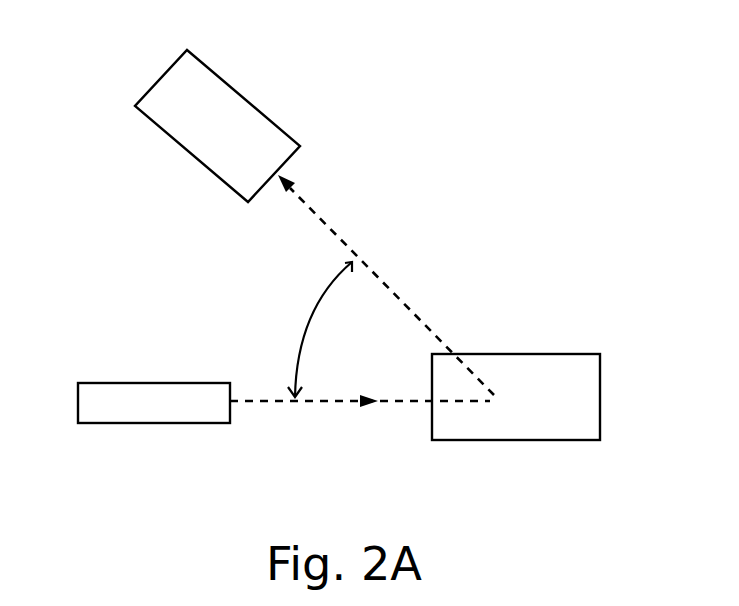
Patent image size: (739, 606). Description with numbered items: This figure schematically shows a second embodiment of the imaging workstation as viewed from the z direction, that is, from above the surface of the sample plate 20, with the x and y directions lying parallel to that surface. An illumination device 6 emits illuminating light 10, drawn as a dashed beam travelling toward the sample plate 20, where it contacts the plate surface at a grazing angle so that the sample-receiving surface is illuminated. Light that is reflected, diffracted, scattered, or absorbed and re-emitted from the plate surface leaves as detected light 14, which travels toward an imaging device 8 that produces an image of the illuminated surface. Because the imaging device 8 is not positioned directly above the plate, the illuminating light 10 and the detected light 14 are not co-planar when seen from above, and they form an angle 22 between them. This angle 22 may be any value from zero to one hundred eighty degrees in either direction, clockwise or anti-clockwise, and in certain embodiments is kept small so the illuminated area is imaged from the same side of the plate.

The illumination device 6 is at (152, 393).
The imaging device 8 is at (214, 97).
The illuminating light 10 is at (340, 403).
The detected light 14 is at (393, 292).
The sample plate 20 is at (523, 373).
The angle 22 is at (318, 300).